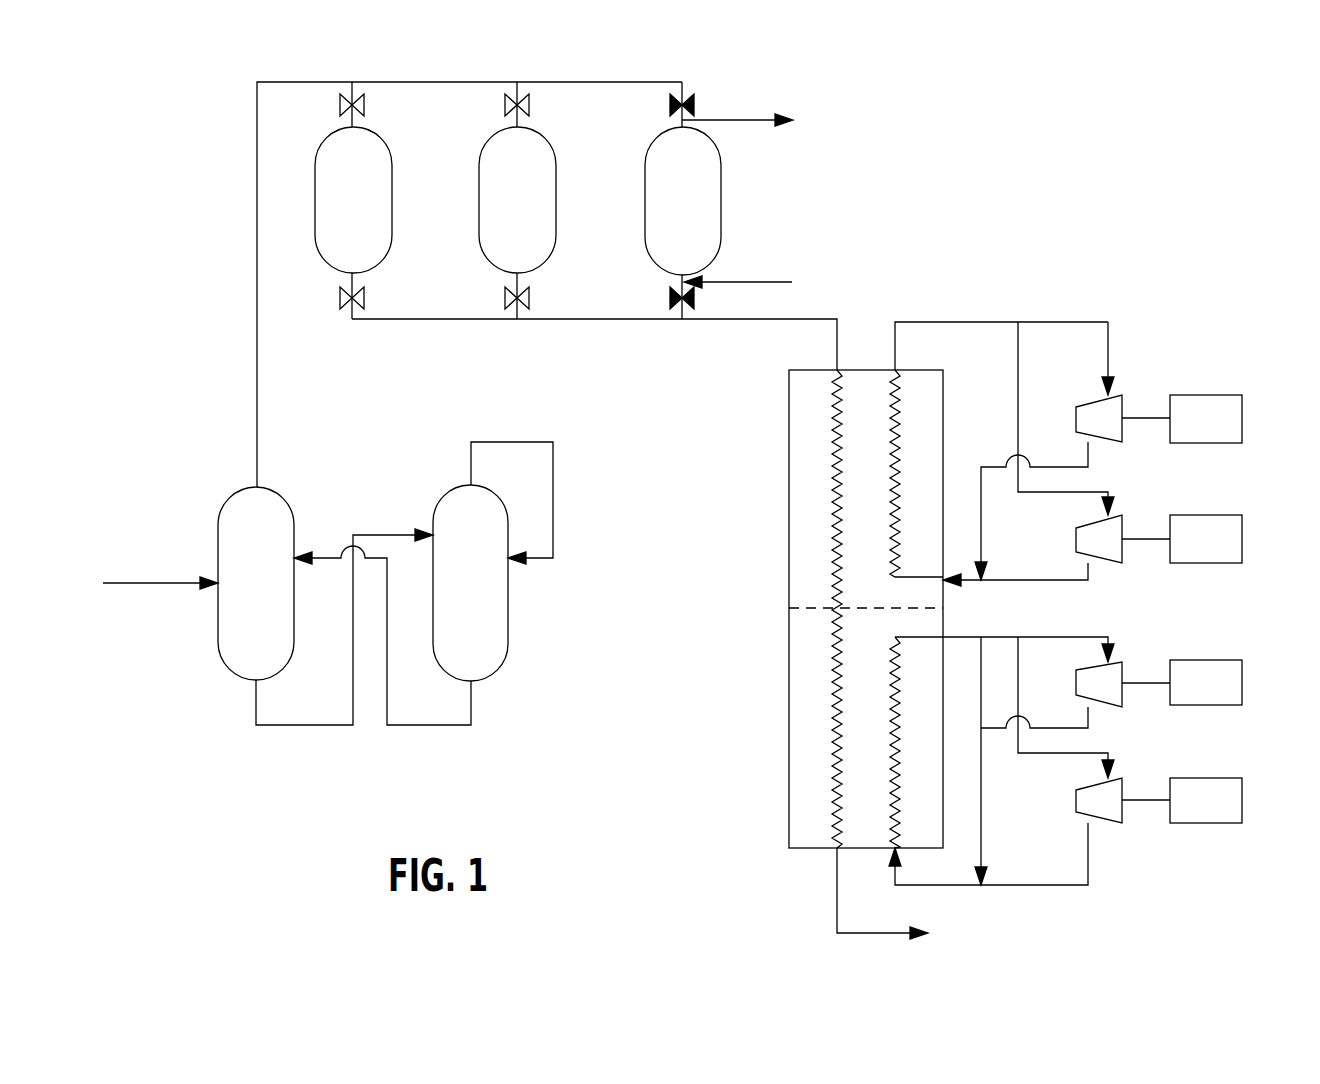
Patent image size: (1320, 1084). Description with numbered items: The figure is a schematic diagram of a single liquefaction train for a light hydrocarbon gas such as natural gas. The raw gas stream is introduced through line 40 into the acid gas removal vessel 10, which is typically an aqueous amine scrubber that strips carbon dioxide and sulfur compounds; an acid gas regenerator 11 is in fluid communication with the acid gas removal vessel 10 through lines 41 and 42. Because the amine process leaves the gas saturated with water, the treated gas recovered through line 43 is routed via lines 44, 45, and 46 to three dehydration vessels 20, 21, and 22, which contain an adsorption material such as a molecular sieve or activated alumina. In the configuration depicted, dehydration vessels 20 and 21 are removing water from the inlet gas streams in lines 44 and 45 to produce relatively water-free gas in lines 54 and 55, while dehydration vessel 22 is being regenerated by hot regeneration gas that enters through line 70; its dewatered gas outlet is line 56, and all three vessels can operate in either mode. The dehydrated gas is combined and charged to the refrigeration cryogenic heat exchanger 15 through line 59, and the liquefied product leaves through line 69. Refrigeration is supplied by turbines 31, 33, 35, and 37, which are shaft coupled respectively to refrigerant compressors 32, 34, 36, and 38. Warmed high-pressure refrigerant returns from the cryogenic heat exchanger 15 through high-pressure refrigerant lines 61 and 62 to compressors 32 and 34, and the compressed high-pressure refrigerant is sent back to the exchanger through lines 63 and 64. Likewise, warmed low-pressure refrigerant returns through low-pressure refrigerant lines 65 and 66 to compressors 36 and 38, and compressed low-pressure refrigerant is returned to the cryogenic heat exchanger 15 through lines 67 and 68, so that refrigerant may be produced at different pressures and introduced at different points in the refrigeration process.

The acid gas removal vessel 10 is at (294, 652).
The acid gas regenerator 11 is at (508, 656).
The refrigeration cryogenic heat exchanger 15 is at (789, 520).
The dehydration vessel 20 is at (390, 245).
The dehydration vessel 21 is at (554, 245).
The dehydration vessel 22 is at (718, 248).
The turbine 31 is at (1242, 418).
The refrigerant compressor 32 is at (1100, 442).
The turbine 33 is at (1242, 539).
The refrigerant compressor 34 is at (1100, 563).
The turbine 35 is at (1242, 683).
The refrigerant compressor 36 is at (1100, 707).
The turbine 37 is at (1242, 800).
The refrigerant compressor 38 is at (1100, 823).
The line 40 is at (130, 583).
The line 41 is at (300, 725).
The line 42 is at (430, 725).
The line 43 is at (257, 428).
The line 44 is at (358, 92).
The line 45 is at (523, 92).
The line 46 is at (690, 92).
The line 54 is at (358, 310).
The line 55 is at (522, 316).
The line 56 is at (688, 318).
The line 59 is at (798, 320).
The high-pressure refrigerant line 61 is at (1018, 377).
The high-pressure refrigerant line 62 is at (1108, 360).
The line 63 is at (981, 530).
The line 64 is at (1040, 580).
The low-pressure refrigerant line 65 is at (1018, 668).
The low-pressure refrigerant line 66 is at (1090, 637).
The line 67 is at (981, 830).
The line 68 is at (1066, 885).
The line 69 is at (880, 933).
The line 70 is at (790, 282).